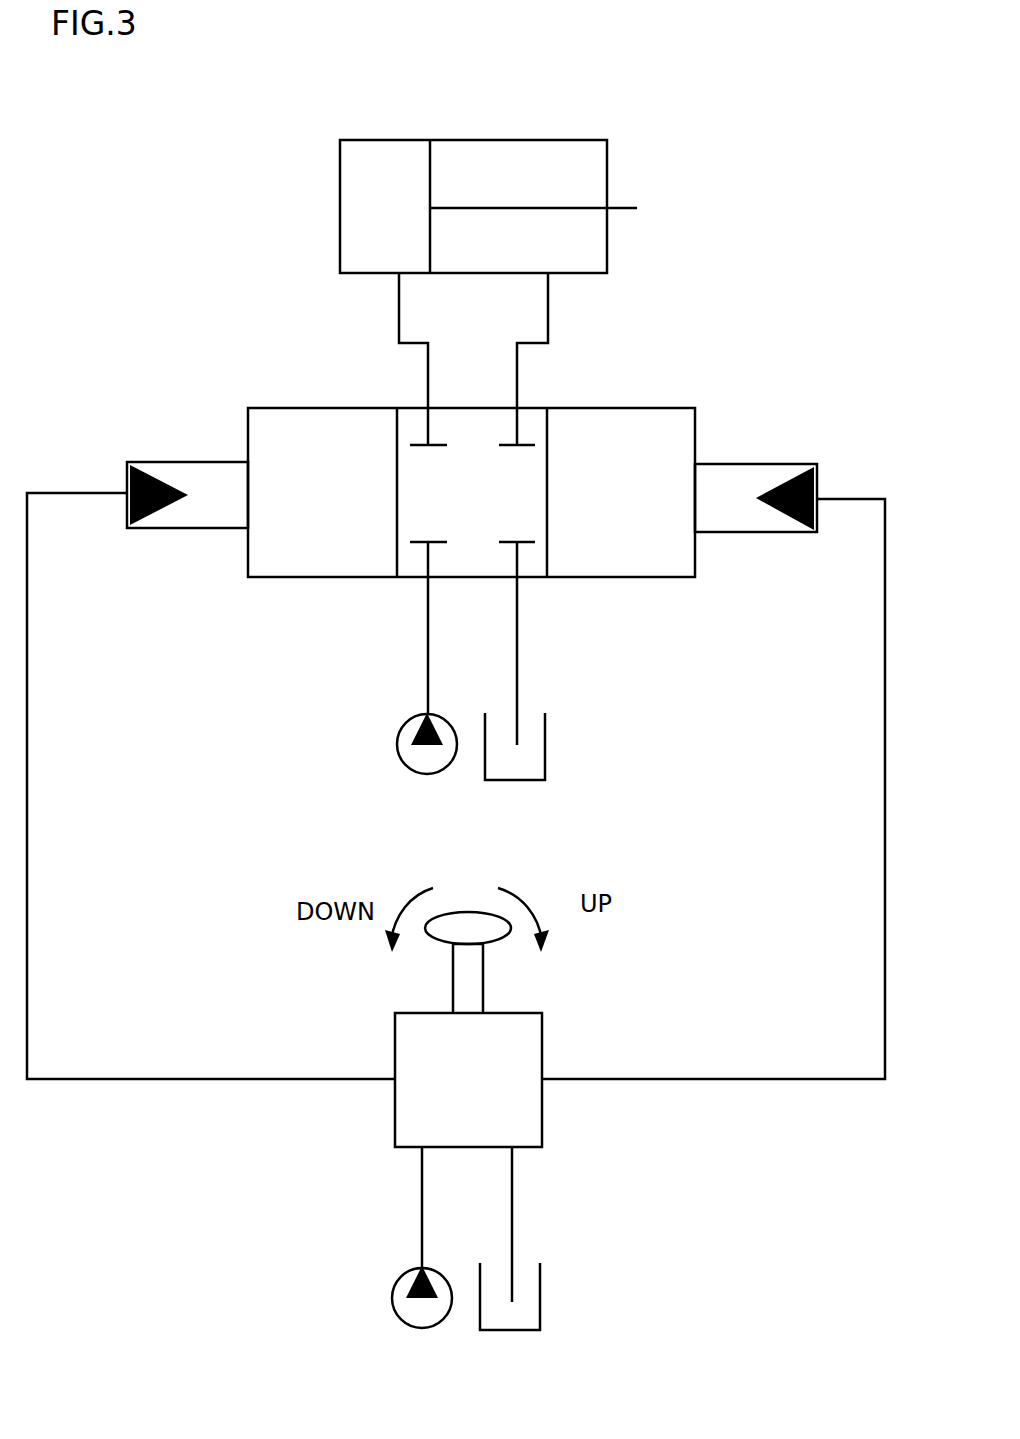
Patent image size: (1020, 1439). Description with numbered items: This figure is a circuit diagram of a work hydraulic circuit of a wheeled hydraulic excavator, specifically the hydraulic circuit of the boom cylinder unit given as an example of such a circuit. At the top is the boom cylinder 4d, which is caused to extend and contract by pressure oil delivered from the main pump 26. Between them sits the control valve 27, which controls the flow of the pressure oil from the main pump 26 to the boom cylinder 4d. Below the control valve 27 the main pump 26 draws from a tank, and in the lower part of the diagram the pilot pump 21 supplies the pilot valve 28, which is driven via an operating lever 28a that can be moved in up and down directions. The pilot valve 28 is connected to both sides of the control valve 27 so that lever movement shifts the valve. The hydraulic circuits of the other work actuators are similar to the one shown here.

The boom cylinder 4d is at (487, 140).
The control valve 27 is at (655, 409).
The main pump 26 is at (396, 752).
The pilot valve 28 is at (542, 1146).
The operating lever 28a is at (485, 976).
The pilot pump 21 is at (392, 1293).